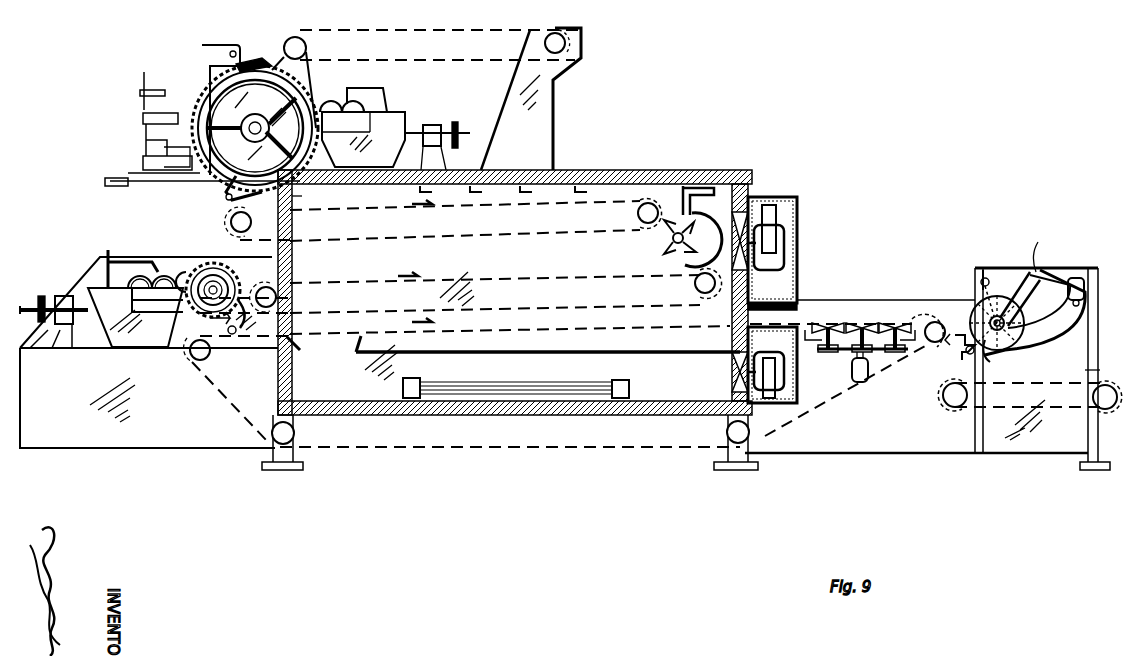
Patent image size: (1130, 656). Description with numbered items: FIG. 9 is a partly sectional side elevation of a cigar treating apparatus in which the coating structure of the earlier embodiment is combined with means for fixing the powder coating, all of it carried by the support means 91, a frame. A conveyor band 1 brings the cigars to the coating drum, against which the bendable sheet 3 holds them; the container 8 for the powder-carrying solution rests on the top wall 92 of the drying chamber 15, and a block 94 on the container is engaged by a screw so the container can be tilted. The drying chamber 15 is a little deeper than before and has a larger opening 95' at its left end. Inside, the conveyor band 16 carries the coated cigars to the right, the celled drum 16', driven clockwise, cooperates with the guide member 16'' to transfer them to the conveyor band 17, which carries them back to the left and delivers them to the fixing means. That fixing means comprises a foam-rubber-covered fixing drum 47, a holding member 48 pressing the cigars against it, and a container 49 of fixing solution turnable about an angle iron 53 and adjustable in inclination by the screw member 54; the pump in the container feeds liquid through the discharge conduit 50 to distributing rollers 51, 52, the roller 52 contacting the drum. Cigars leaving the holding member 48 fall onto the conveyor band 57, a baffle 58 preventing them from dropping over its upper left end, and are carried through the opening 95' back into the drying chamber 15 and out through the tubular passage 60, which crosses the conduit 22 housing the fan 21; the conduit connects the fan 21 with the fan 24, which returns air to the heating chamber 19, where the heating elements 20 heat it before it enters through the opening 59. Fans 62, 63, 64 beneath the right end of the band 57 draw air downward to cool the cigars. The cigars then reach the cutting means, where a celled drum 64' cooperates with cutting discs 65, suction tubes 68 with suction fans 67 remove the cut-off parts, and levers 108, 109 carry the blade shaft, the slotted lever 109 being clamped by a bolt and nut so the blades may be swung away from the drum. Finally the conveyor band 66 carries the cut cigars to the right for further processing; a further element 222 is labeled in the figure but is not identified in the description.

The conveyor band 1 is at (452, 28).
The upper guide track 222 is at (382, 5).
The bendable sheet 3 is at (262, 62).
The container 8 is at (362, 127).
The block 94 is at (410, 126).
The drying chamber 15 is at (696, 170).
The upper wall 92 is at (643, 170).
The opening 95' is at (307, 207).
The conveyor band 16 is at (443, 220).
The guide member 16'' is at (707, 226).
The celled drum 16' is at (661, 239).
The conveyor band 17 is at (618, 306).
The conduit 22 is at (797, 222).
The fan 21 is at (792, 263).
The fan 24 is at (772, 368).
The passage 60 is at (790, 322).
The fan 62 is at (824, 328).
The fan 63 is at (862, 343).
The fan 64 is at (897, 328).
The opening 59 is at (334, 352).
The heating chamber 19 is at (452, 380).
The heating elements 20 is at (540, 385).
The support means 91 is at (241, 459).
The screw member 54 is at (38, 296).
The container 49 is at (120, 315).
The distributing roller 51 is at (147, 276).
The discharge conduit 50 is at (108, 258).
The distributing roller 52 is at (190, 282).
The fixing drum 47 is at (205, 262).
The holding member 48 is at (246, 318).
The baffle 58 is at (197, 312).
The angle iron 53 is at (192, 356).
The conveyor band 57 is at (220, 386).
The conveyor band 66 is at (1020, 372).
The cutting discs 65 is at (1020, 316).
The lever 109 is at (1005, 292).
The lever 108 is at (983, 282).
The suction tubes 68 is at (1070, 332).
The suction fan 67 is at (1082, 280).
The celled drum 64' is at (951, 355).